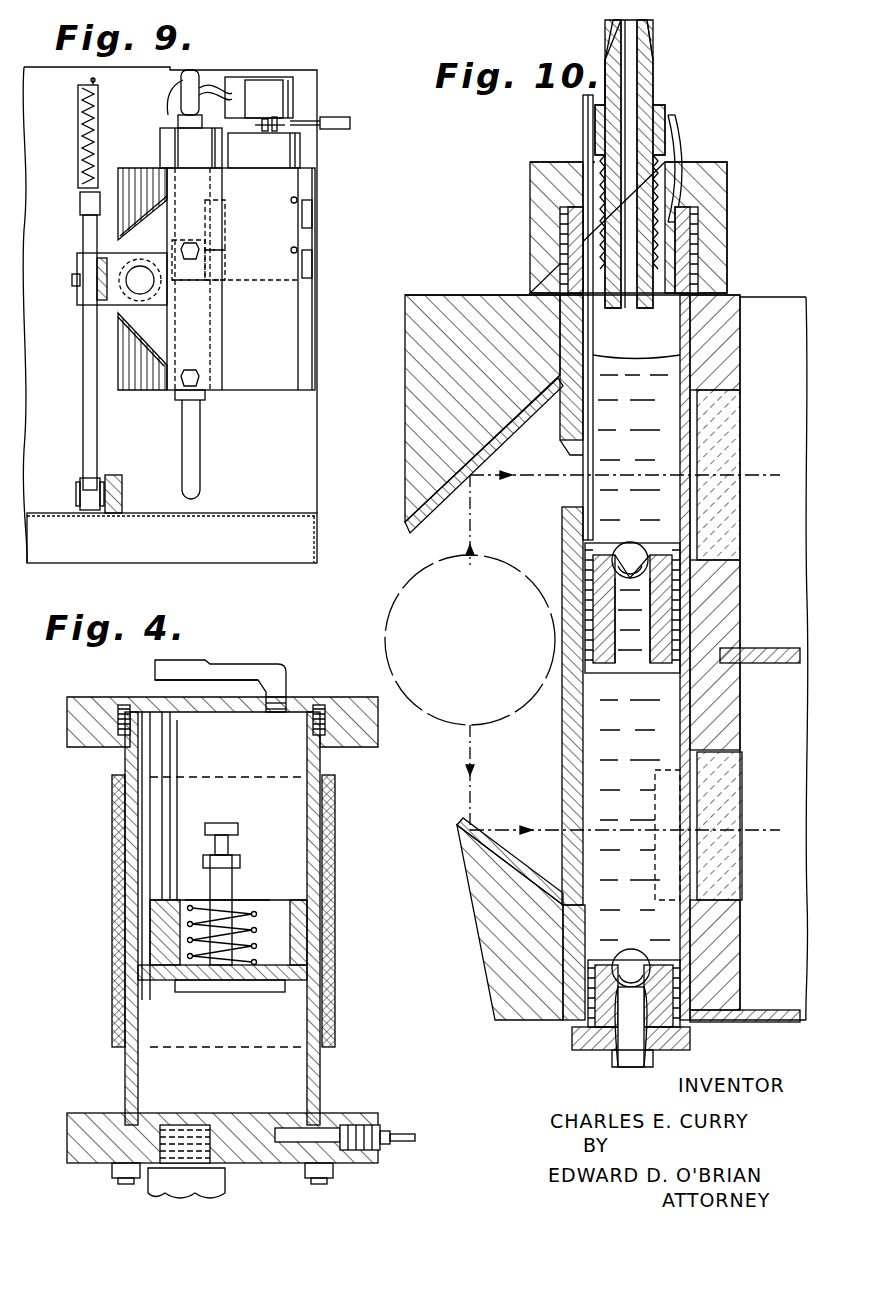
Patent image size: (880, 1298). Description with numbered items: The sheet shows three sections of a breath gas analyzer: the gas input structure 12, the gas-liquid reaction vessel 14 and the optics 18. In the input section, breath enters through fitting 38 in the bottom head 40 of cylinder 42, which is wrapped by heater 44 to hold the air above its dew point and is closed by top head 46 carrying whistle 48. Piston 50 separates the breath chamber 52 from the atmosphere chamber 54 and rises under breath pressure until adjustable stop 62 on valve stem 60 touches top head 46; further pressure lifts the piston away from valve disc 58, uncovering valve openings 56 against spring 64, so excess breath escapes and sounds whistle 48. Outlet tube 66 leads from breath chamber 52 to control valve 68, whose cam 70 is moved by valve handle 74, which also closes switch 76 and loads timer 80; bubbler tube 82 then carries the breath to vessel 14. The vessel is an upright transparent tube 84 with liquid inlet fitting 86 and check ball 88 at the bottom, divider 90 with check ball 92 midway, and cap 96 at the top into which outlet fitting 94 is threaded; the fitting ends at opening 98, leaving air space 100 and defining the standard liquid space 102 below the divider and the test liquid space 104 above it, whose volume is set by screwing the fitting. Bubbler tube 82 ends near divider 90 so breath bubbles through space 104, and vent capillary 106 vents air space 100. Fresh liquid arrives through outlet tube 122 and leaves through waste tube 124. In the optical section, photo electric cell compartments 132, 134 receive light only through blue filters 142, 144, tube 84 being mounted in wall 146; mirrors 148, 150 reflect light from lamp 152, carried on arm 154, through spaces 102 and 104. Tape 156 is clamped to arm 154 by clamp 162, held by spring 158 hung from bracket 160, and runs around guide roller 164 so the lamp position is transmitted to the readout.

In FIG. 4, the gas input structure 12 is at (275, 655).
In FIG. 10, the gas-liquid reaction vessel 14 is at (770, 188).
In FIG. 9, the optics 18 is at (330, 209).
In FIG. 10, the optics 18 is at (425, 590).
In FIG. 4, the fitting 38 is at (155, 1188).
In FIG. 4, the bottom head 40 is at (85, 1136).
In FIG. 4, the cylinder 42 is at (312, 1070).
In FIG. 4, the heater 44 is at (328, 870).
In FIG. 4, the top head 46 is at (85, 712).
In FIG. 4, the whistle 48 is at (250, 655).
In FIG. 4, the piston 50 is at (300, 930).
In FIG. 4, the breath chamber 52 is at (282, 1008).
In FIG. 4, the atmosphere chamber 54 is at (288, 827).
In FIG. 4, the valve openings 56 is at (258, 950).
In FIG. 4, the valve disc 58 is at (218, 992).
In FIG. 4, the valve stem 60 is at (230, 868).
In FIG. 4, the adjustable stop 62 is at (228, 823).
In FIG. 4, the spring 64 is at (268, 905).
In FIG. 4, the outlet tube 66 is at (385, 1128).
In FIG. 9, the control valve 68 is at (262, 77).
In FIG. 9, the cam 70 is at (275, 90).
In FIG. 9, the valve handle 74 is at (350, 123).
In FIG. 9, the switch 76 is at (278, 127).
In FIG. 9, the timer 80 is at (292, 152).
In FIG. 10, the bubbler tube 82 is at (583, 120).
In FIG. 9, the upright tube 84 is at (210, 296).
In FIG. 10, the upright tube 84 is at (682, 343).
In FIG. 9, the liquid inlet fitting 86 is at (200, 395).
In FIG. 10, the liquid inlet fitting 86 is at (572, 1038).
In FIG. 10, the check ball 88 is at (642, 945).
In FIG. 10, the divider 90 is at (593, 570).
In FIG. 10, the check ball 92 is at (632, 542).
In FIG. 10, the outlet fitting 94 is at (652, 100).
In FIG. 10, the cap 96 is at (540, 195).
In FIG. 10, the opening 98 is at (682, 372).
In FIG. 10, the air space 100 is at (660, 240).
In FIG. 10, the standard liquid space 102 is at (602, 812).
In FIG. 10, the test liquid space 104 is at (607, 447).
In FIG. 10, the vent capillary 106 is at (678, 135).
In FIG. 9, the outlet tube 122 is at (195, 462).
In FIG. 9, the waste tube 124 is at (196, 80).
In FIG. 9, the photo electric cell compartment 132 is at (302, 190).
In FIG. 10, the photo electric cell compartment 132 is at (766, 472).
In FIG. 9, the photo electric cell compartment 134 is at (300, 293).
In FIG. 10, the photo electric cell compartment 134 is at (745, 785).
In FIG. 9, the blue filter 142 is at (222, 215).
In FIG. 10, the blue filter 142 is at (728, 445).
In FIG. 9, the blue filter 144 is at (225, 328).
In FIG. 10, the blue filter 144 is at (725, 815).
In FIG. 10, the wall 146 is at (715, 1000).
In FIG. 9, the mirror 148 is at (150, 215).
In FIG. 10, the mirror 148 is at (490, 460).
In FIG. 9, the mirror 150 is at (160, 350).
In FIG. 10, the mirror 150 is at (505, 880).
In FIG. 9, the lamp 152 is at (118, 292).
In FIG. 10, the lamp 152 is at (438, 728).
In FIG. 9, the arm 154 is at (100, 268).
In FIG. 9, the tape 156 is at (88, 390).
In FIG. 9, the spring 158 is at (98, 118).
In FIG. 9, the bracket 160 is at (80, 117).
In FIG. 9, the clamp 162 is at (80, 290).
In FIG. 9, the guide roller 164 is at (92, 483).